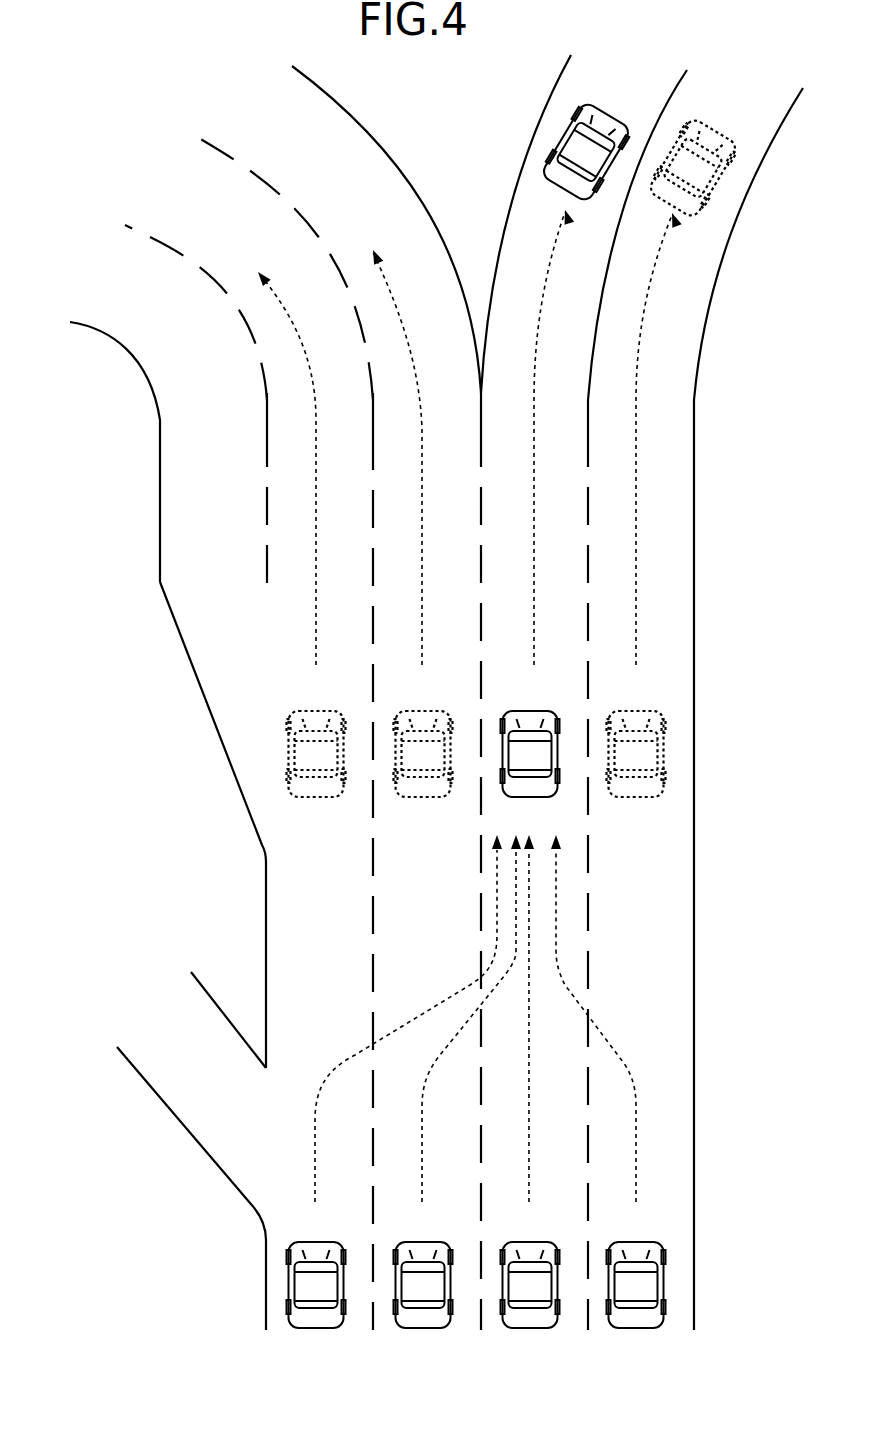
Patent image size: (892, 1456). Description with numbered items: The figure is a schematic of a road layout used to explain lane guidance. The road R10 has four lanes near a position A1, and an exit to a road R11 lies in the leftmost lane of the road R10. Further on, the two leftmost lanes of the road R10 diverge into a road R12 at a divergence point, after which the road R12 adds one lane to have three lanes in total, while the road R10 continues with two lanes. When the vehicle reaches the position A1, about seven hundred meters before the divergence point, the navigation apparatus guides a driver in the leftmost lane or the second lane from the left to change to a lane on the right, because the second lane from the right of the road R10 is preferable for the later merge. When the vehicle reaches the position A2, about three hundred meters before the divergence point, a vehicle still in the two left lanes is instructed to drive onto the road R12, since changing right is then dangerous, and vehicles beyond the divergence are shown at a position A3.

The road R10 is at (680, 900).
The road R11 is at (191, 1151).
The road R12 is at (217, 360).
The position A1 is at (522, 1285).
The position A2 is at (522, 754).
The vehicle group at branch destination A3 is at (666, 174).